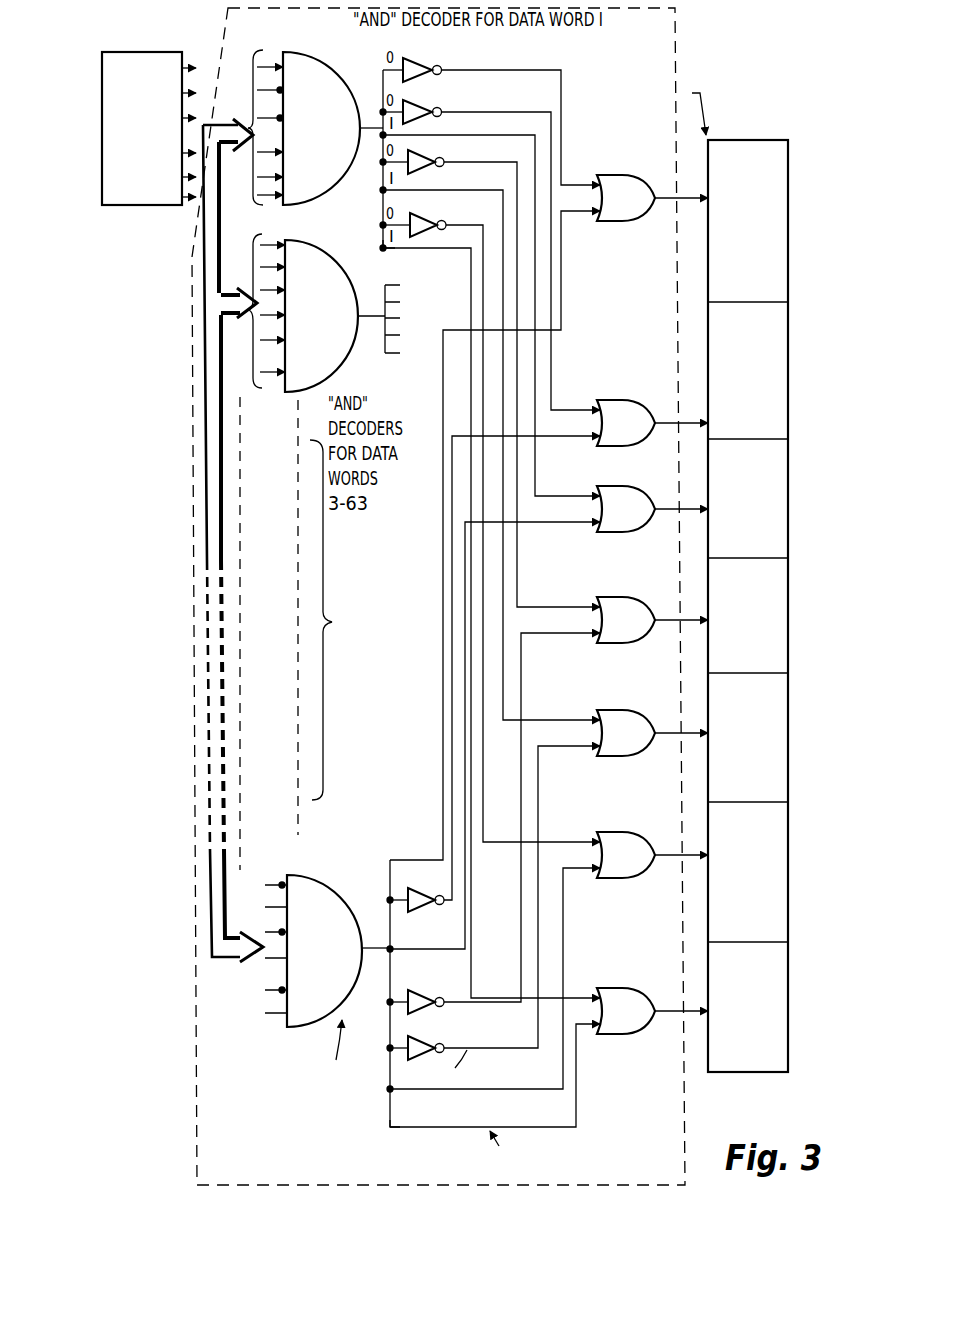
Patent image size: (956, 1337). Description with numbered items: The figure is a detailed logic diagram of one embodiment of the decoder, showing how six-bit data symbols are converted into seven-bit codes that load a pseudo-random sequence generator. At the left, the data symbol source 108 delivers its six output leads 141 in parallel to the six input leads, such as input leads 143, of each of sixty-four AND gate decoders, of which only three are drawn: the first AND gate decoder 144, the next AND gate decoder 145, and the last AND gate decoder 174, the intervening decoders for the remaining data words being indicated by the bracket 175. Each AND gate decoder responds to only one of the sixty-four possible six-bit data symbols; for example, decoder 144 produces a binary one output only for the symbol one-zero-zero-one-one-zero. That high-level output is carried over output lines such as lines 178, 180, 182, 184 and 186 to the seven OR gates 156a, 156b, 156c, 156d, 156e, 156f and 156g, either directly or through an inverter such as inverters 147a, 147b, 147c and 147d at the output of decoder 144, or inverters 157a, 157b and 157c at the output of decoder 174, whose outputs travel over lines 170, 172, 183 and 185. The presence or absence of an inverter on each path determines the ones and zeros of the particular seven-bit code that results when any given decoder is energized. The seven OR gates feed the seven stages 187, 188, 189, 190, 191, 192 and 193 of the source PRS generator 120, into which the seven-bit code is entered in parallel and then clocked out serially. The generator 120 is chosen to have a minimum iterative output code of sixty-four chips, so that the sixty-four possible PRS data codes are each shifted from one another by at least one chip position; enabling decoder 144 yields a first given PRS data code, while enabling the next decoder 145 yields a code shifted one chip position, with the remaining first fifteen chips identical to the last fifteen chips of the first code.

The data symbol source 108 is at (166, 207).
The source PRS generator 120 is at (790, 137).
The output leads 141 is at (197, 75).
The input leads 143 is at (249, 126).
The AND gate decoder 144 is at (310, 62).
The AND gate decoder 145 is at (310, 257).
The inverter 147a is at (423, 60).
The inverter 147b is at (432, 106).
The inverter 147c is at (434, 170).
The inverter 147d is at (416, 220).
The OR gate 156a is at (598, 175).
The OR gate 156b is at (603, 400).
The OR gate 156c is at (619, 487).
The OR gate 156d is at (620, 599).
The OR gate 156e is at (617, 710).
The OR gate 156f is at (621, 833).
The OR gate 156g is at (616, 988).
The inverter 157a is at (495, 674).
The inverter 157b is at (436, 990).
The inverter 157c is at (450, 1046).
The output line 170 is at (396, 858).
The output line 172 is at (438, 947).
The AND gate decoder 174 is at (306, 876).
The AND decoders for data words 3-63 175 is at (328, 668).
The output line 178 is at (454, 140).
The output line 180 is at (480, 164).
The output line 182 is at (464, 223).
The output line 183 is at (400, 1091).
The output line 184 is at (478, 228).
The binary output line 185 is at (425, 1130).
The output line 186 is at (410, 250).
The PRS generator stage 1 187 is at (789, 224).
The PRS generator stage 2 188 is at (789, 357).
The PRS generator stage 3 189 is at (789, 501).
The PRS generator stage 4 190 is at (789, 631).
The PRS generator stage 5 191 is at (789, 749).
The PRS generator stage 6 192 is at (789, 894).
The PRS generator stage 7 193 is at (789, 1009).